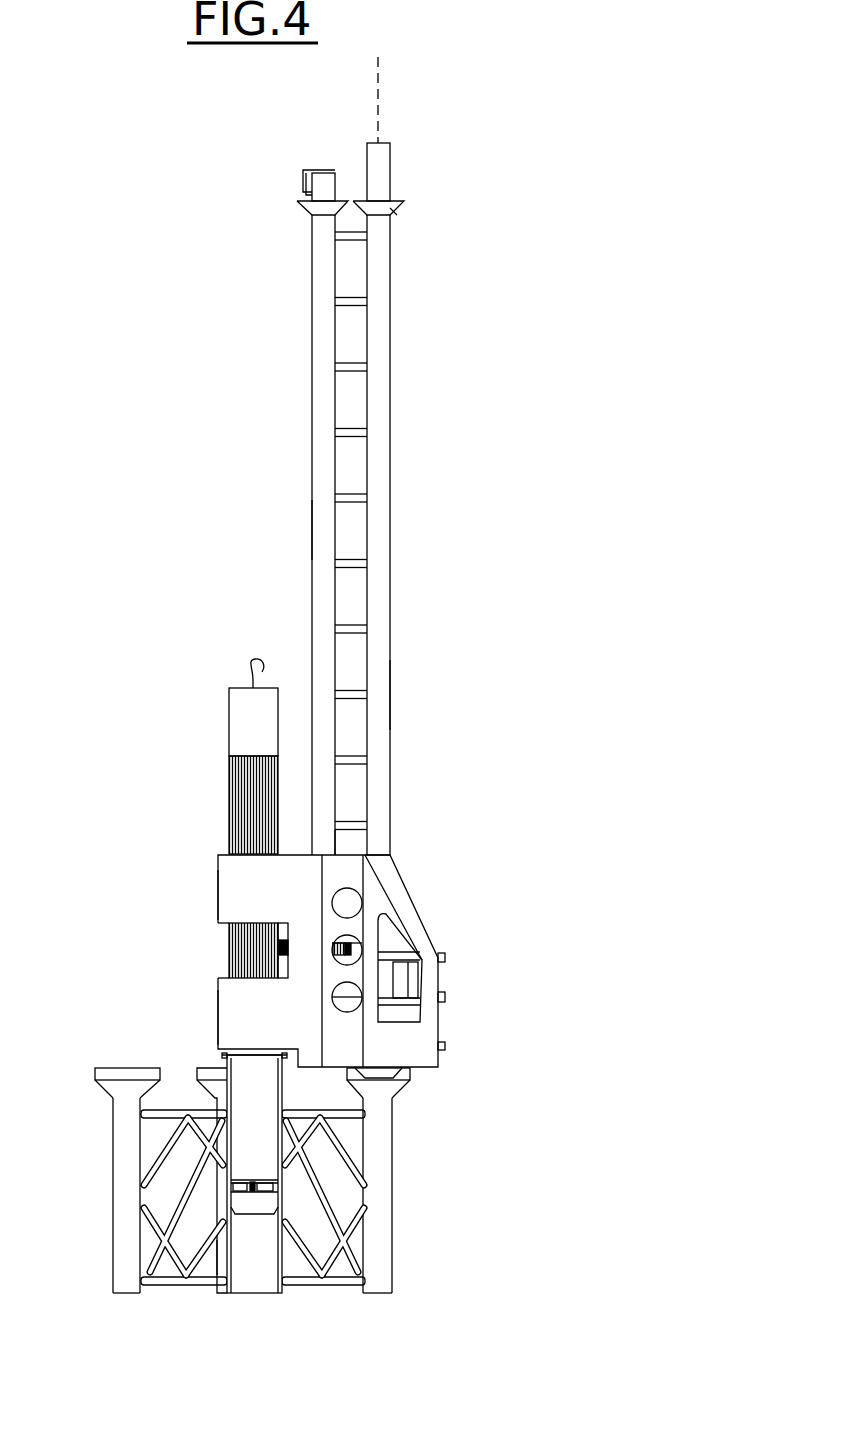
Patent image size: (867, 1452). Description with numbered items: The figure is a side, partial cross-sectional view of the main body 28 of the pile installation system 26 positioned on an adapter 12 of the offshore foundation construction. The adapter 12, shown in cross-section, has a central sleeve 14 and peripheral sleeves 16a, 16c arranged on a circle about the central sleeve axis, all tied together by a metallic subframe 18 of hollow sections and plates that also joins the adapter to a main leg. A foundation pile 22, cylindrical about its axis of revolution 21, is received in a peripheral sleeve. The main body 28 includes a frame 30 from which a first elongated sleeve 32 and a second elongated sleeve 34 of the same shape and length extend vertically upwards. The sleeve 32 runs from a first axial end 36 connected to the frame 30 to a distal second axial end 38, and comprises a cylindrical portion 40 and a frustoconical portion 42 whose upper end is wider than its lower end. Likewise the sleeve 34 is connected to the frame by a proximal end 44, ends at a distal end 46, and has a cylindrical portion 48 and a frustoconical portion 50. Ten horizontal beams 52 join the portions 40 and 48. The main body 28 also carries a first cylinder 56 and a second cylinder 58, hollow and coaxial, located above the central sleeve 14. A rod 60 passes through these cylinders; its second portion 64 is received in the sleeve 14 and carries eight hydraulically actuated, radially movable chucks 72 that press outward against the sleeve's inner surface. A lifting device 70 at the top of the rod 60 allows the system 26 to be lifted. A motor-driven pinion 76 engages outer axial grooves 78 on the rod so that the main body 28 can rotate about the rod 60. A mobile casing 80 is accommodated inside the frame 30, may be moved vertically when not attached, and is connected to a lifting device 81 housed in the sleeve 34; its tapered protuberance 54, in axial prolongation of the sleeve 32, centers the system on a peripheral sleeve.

The adapter 12 is at (272, 1211).
The central sleeve 14 is at (218, 1258).
The peripheral sleeve 16a is at (114, 1195).
The peripheral sleeve 16c is at (426, 1180).
The metallic subframe 18 is at (332, 1217).
The axis of revolution 21 is at (376, 82).
The foundation pile 22 is at (392, 154).
The pile installation system 26 is at (216, 743).
The main body 28 is at (339, 927).
The frame 30 is at (417, 1040).
The first elongated sleeve 32 is at (385, 587).
The second elongated sleeve 34 is at (318, 587).
The first axial end 36 is at (385, 856).
The second axial end 38 is at (397, 203).
The cylindrical portion 40 is at (392, 697).
The frustoconical portion 42 is at (400, 211).
The proximal end 44 is at (325, 848).
The distal end 46 is at (303, 186).
The cylindrical portion 48 is at (312, 535).
The frustoconical portion 50 is at (302, 212).
The horizontal beams 52 is at (348, 433).
The tapered protuberance 54 is at (383, 1070).
The first cylinder 56 is at (229, 894).
The second cylinder 58 is at (229, 1019).
The rod 60 is at (232, 690).
The second portion 64 is at (193, 1199).
The lifting device 70 is at (248, 664).
The radially movable chucks 72 is at (243, 1190).
The pinion 76 is at (355, 938).
The outer axial grooves 78 is at (229, 950).
The mobile casing 80 is at (448, 998).
The lifting device 81 is at (323, 180).